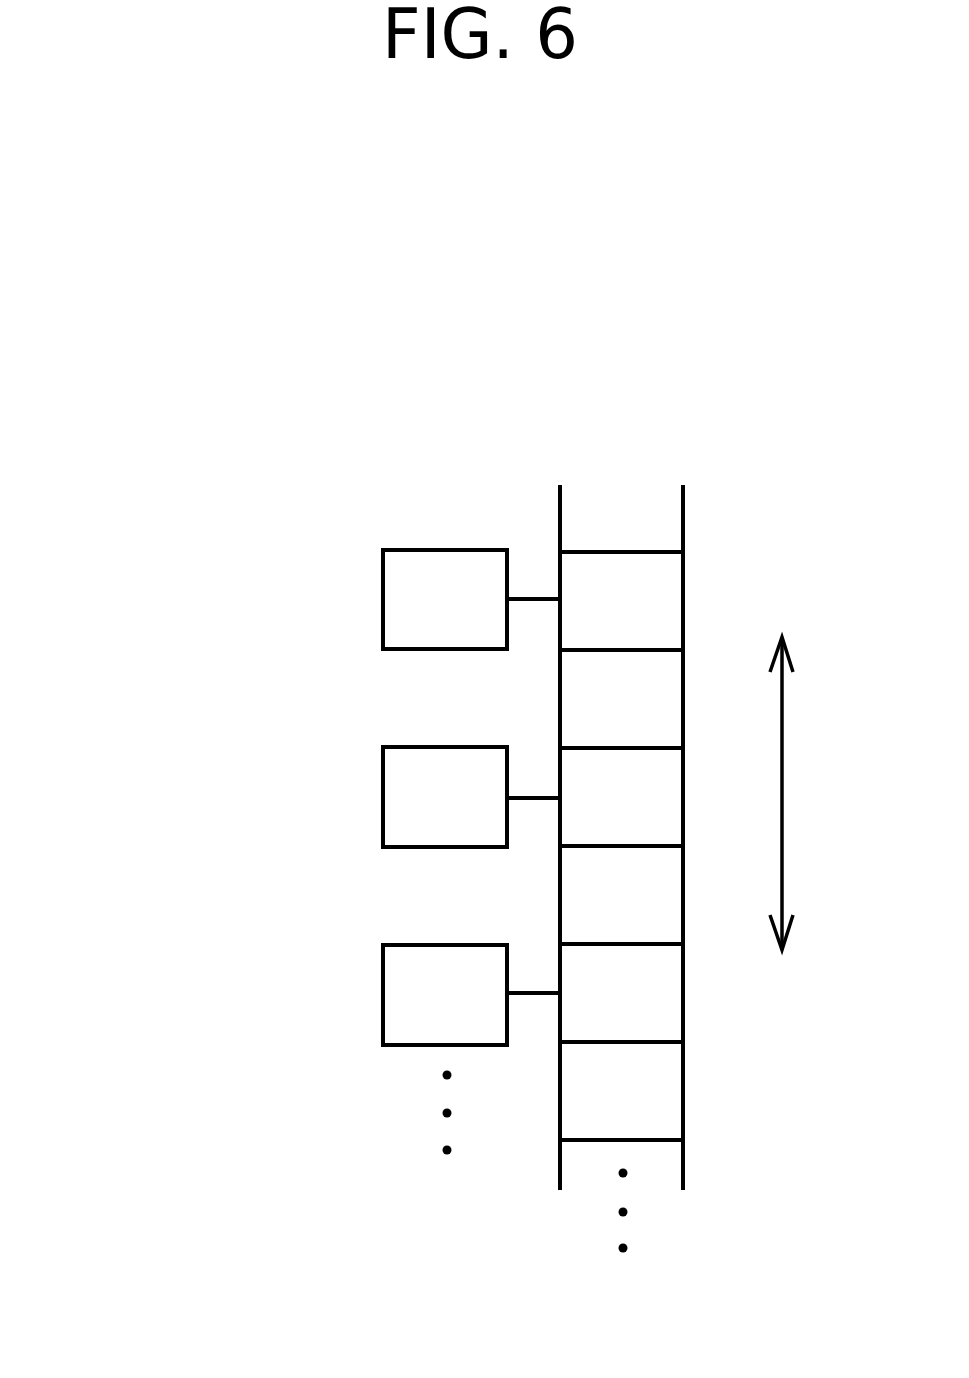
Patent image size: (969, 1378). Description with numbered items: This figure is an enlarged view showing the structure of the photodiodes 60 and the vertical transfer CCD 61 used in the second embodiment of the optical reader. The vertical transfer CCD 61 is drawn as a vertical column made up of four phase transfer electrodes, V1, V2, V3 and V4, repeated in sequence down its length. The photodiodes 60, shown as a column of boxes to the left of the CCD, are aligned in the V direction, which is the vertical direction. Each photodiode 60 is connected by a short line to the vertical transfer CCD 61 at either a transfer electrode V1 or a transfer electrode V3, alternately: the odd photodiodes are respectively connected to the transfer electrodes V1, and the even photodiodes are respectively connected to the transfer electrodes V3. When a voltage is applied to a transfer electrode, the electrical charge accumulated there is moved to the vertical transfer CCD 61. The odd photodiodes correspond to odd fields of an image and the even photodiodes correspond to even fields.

The photodiodes 60 is at (397, 995).
The vertical transfer CCD 61 is at (639, 808).
The V direction V is at (807, 793).
The transfer electrode V1 is at (626, 798).
The transfer electrode V2 is at (626, 896).
The transfer electrode V3 is at (626, 798).
The transfer electrode V4 is at (626, 896).